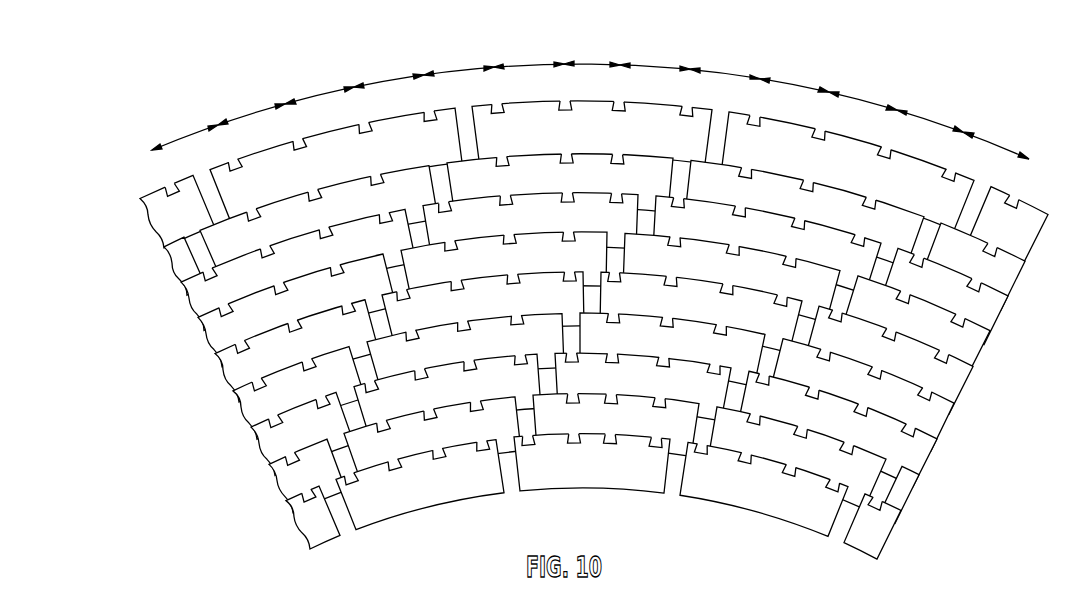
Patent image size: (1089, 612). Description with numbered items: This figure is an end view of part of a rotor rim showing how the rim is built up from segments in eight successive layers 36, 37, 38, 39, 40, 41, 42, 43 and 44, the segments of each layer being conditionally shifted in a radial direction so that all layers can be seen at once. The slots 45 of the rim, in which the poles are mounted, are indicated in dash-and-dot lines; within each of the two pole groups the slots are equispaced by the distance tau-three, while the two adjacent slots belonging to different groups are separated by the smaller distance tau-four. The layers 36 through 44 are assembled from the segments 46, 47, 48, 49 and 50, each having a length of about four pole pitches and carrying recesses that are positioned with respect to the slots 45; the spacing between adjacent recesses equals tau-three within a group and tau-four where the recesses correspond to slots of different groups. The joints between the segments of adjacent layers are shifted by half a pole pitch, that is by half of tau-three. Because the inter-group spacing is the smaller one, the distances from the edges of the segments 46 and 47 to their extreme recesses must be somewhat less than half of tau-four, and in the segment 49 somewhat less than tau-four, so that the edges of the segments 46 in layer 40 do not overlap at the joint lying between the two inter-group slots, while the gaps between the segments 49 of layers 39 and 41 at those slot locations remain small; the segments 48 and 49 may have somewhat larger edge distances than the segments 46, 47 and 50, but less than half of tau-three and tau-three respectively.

The rim layer 36 is at (551, 323).
The rim layer 37 is at (552, 320).
The rim layer 38 is at (551, 324).
The rim layer 39 is at (215, 422).
The rim layer 40 is at (195, 385).
The rim layer 41 is at (177, 353).
The rim layer 42 is at (162, 317).
The rim layer 43 is at (147, 270).
The rim layer 44 is at (135, 225).
The slots 45 is at (174, 201).
The segment 46 is at (559, 326).
The segment 47 is at (648, 118).
The segment 48 is at (522, 197).
The segment 49 is at (337, 188).
The segment 50 is at (582, 150).